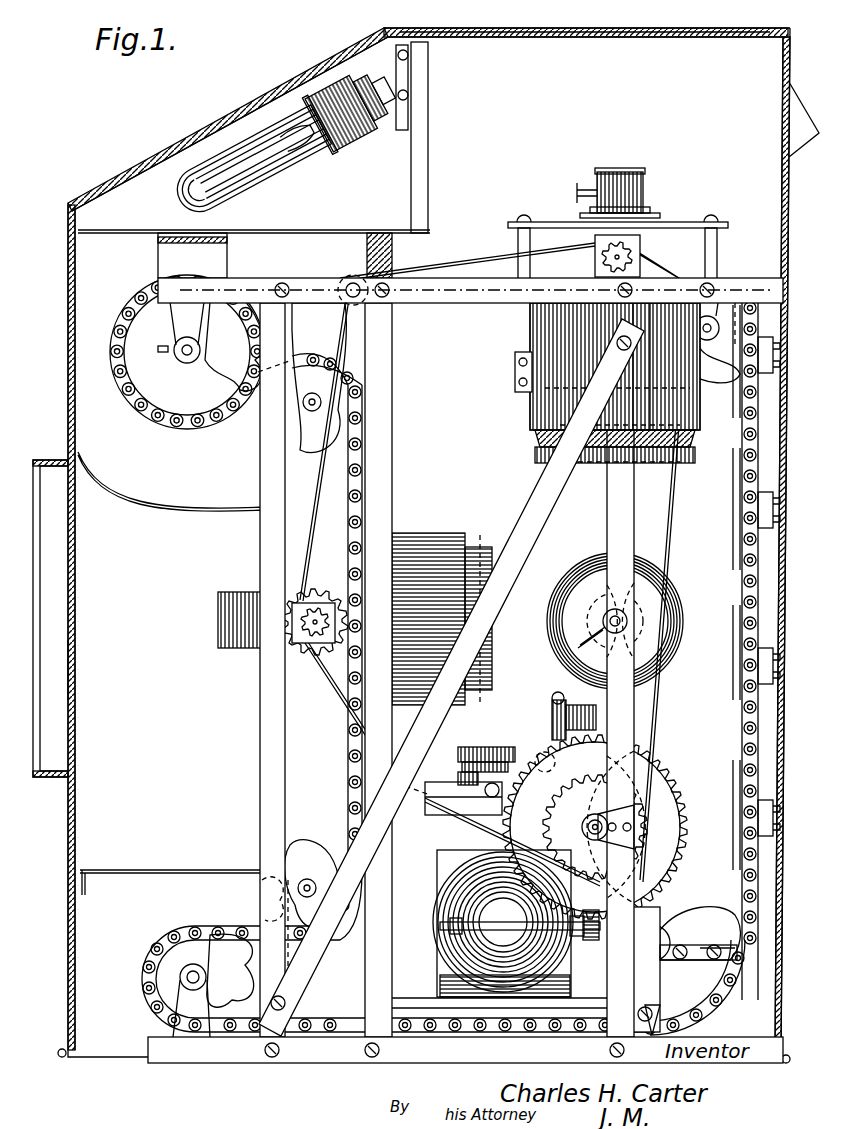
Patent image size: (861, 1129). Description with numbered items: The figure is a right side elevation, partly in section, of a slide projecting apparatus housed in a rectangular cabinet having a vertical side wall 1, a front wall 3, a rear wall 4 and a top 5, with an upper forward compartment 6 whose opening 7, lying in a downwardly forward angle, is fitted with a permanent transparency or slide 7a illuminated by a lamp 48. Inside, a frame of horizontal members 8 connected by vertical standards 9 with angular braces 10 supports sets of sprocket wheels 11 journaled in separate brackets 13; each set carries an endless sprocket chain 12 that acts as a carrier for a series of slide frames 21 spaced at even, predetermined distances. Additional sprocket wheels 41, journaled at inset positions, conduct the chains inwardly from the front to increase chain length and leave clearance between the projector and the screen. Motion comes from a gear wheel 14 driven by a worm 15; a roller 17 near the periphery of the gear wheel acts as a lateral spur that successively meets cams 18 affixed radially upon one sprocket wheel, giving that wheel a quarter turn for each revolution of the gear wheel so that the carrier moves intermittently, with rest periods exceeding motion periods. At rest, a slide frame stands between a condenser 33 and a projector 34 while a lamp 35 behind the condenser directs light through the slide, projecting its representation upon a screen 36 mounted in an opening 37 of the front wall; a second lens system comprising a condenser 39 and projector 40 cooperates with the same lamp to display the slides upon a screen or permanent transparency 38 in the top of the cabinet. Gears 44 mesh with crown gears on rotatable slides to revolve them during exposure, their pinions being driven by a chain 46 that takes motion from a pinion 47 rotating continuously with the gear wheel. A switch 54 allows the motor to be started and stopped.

The vertical side wall 1 is at (443, 366).
The front wall 3 is at (80, 360).
The rear wall 4 is at (790, 462).
The top 5 is at (447, 30).
The upper forward compartment 6 is at (353, 121).
The opening 7 is at (110, 192).
The permanent transparency or slide 7a is at (200, 138).
The horizontal frame member 8 is at (483, 300).
The vertical standard 9 is at (390, 468).
The angular brace 10 is at (520, 568).
The sprocket wheel 11 is at (700, 913).
The endless sprocket chain 12 is at (740, 576).
The bracket 13 is at (195, 328).
The gear wheel 14 is at (660, 812).
The worm 15 is at (598, 942).
The roller 17 is at (585, 815).
The cam 18 is at (700, 950).
The slide frame 21 is at (740, 500).
The condenser 33 is at (430, 532).
The projector 34 is at (246, 590).
The lamp 35 is at (585, 565).
The screen 36 is at (40, 665).
The opening 37 is at (72, 695).
The screen or permanent transparency 38 is at (615, 38).
The condenser 39 is at (548, 405).
The projector 40 is at (645, 182).
The additional sprocket wheel 41 is at (300, 430).
The gear 44 is at (640, 255).
The chain 46 is at (355, 710).
The pinion 47 is at (593, 827).
The lamp 48 is at (262, 172).
The switch 54 is at (440, 790).